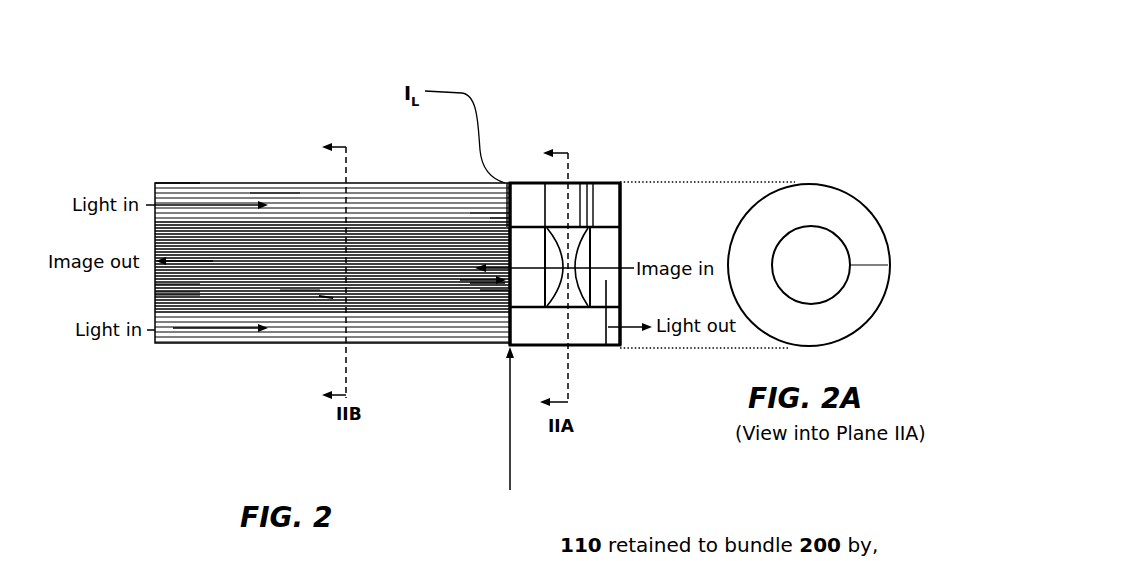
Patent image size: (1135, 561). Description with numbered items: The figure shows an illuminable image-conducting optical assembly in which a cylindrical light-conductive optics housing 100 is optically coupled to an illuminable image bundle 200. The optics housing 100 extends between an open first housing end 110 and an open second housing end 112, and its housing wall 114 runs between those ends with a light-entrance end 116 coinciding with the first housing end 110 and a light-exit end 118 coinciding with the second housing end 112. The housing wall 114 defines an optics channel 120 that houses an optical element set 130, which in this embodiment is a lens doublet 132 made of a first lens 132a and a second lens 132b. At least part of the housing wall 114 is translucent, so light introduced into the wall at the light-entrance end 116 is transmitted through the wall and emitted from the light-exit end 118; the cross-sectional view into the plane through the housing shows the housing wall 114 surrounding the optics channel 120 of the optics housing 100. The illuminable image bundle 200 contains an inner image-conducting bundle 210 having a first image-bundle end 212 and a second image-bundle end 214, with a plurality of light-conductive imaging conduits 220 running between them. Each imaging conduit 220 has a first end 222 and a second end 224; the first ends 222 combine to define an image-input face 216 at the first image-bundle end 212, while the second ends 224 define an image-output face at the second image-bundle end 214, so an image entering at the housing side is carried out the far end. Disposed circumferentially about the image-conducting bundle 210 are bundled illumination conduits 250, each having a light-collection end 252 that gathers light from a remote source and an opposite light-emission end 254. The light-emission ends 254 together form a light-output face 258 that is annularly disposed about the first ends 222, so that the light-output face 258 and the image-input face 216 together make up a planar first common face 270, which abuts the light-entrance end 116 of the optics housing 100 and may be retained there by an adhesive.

In FIG. 2, the light-conductive optics housing 100 is at (545, 183).
In FIG. 2A, the light-conductive optics housing 100 is at (835, 207).
In FIG. 2, the first housing end 110 is at (572, 515).
In FIG. 2, the second housing end 112 is at (593, 183).
In FIG. 2, the housing wall 114 is at (587, 183).
In FIG. 2A, the housing wall 114 is at (868, 267).
In FIG. 2, the light-entrance end 116 is at (507, 183).
In FIG. 2, the light-exit end 118 is at (622, 202).
In FIG. 2, the optics channel 120 is at (580, 183).
In FIG. 2A, the optics channel 120 is at (822, 253).
In FIG. 2, the optical element set 130 is at (575, 286).
In FIG. 2, the lens doublet 132 is at (532, 278).
In FIG. 2, the first lens 132a is at (612, 245).
In FIG. 2, the second lens 132b is at (511, 297).
In FIG. 2, the illuminable image-transporting optical fiber bundle 200 is at (369, 154).
In FIG. 2, the inner image-conducting bundle 210 is at (298, 290).
In FIG. 2, the first image-bundle end 212 is at (505, 290).
In FIG. 2, the second image-bundle end 214 is at (155, 284).
In FIG. 2, the image-input face 216 is at (436, 342).
In FIG. 2, the imaging conduits 220 is at (317, 290).
In FIG. 2, the first ends of the imaging conduits 222 is at (498, 280).
In FIG. 2, the second ends of the imaging conduits 224 is at (155, 295).
In FIG. 2, the illumination conduits 250 is at (278, 200).
In FIG. 2, the light-collection end 252 is at (155, 187).
In FIG. 2, the light-emission end 254 is at (490, 213).
In FIG. 2, the light-output face 258 is at (505, 212).
In FIG. 2, the first common face 270 is at (510, 425).